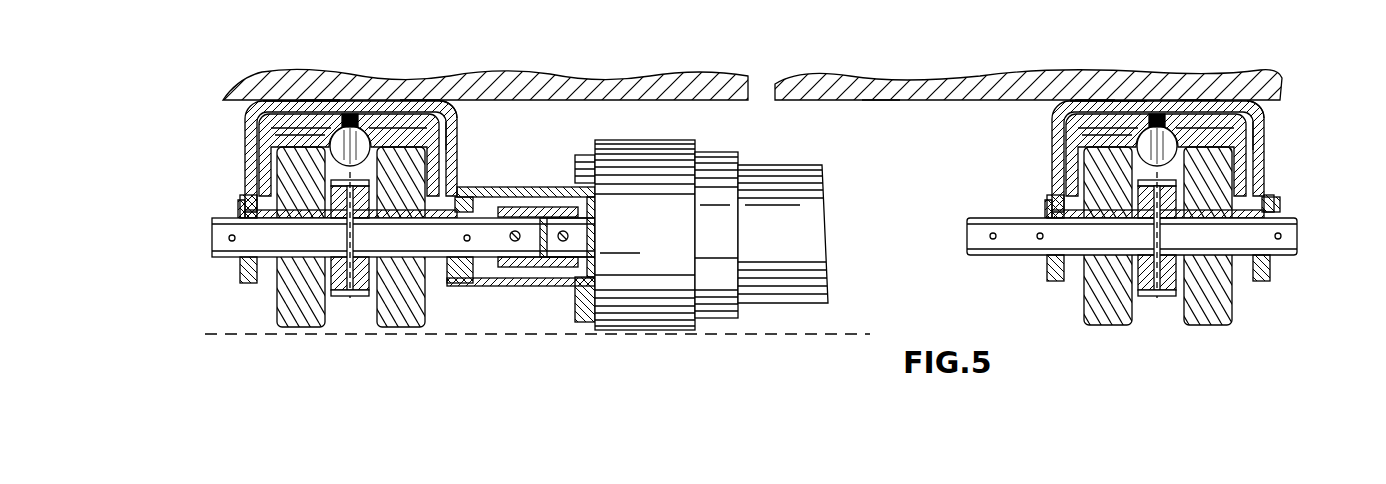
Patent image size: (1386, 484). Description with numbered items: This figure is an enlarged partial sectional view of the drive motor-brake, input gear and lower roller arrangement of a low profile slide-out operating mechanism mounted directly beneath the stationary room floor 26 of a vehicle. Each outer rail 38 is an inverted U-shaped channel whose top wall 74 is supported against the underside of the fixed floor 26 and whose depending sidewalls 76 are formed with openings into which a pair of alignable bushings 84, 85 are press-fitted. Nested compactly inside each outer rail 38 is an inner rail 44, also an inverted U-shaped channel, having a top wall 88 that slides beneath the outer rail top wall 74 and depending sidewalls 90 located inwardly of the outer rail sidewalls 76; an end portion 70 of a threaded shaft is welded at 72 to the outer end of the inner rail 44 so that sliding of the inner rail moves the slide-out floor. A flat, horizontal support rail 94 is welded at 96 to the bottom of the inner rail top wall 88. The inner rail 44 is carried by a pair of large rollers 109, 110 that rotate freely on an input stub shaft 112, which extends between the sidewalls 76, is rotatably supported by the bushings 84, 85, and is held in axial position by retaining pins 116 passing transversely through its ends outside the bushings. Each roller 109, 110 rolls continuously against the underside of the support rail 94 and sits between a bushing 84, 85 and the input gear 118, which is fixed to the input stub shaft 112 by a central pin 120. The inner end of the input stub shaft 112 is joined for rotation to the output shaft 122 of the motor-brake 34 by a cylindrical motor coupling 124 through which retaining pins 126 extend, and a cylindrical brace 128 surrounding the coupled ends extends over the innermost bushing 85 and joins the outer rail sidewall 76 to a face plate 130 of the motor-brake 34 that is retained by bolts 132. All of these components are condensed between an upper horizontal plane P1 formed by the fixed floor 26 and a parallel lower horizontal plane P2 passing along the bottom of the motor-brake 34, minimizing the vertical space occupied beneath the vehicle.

The stationary room floor 26 is at (882, 80).
The motor-brake 34 is at (797, 164).
The outer rail 38 is at (320, 97).
The inner rail 44 is at (433, 98).
The end portion 70 is at (362, 118).
The weld 72 is at (355, 130).
The top wall 74 is at (448, 108).
The sidewalls 76 is at (246, 160).
The bushing 84 is at (242, 203).
The bushing 85 is at (463, 188).
The top wall 88 is at (299, 98).
The sidewalls 90 is at (262, 142).
The support rail 94 is at (343, 128).
The weld 96 is at (452, 126).
The roller 109 is at (301, 324).
The roller 110 is at (407, 324).
The input stub shaft 112 is at (278, 240).
The retaining pins 116 is at (232, 242).
The input gear 118 is at (364, 297).
The central pin 120 is at (347, 297).
The output shaft 122 is at (598, 228).
The motor coupling 124 is at (553, 206).
The retaining pins 126 is at (568, 236).
The cylindrical brace 128 is at (548, 268).
The face plate 130 is at (600, 282).
The bolts 132 is at (586, 153).
The upper horizontal plane P1 is at (882, 100).
The lower horizontal plane P2 is at (762, 336).